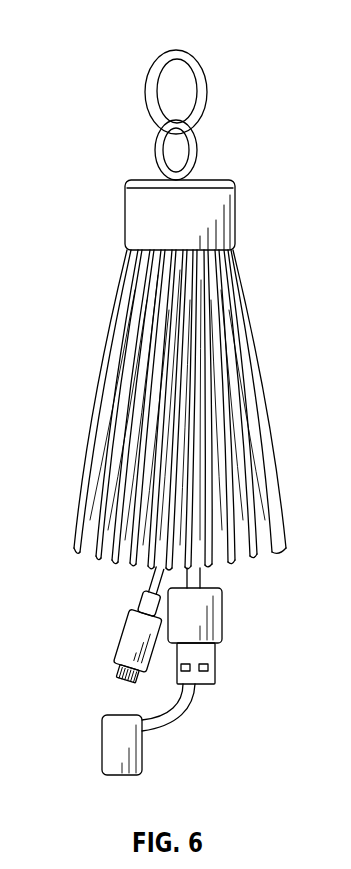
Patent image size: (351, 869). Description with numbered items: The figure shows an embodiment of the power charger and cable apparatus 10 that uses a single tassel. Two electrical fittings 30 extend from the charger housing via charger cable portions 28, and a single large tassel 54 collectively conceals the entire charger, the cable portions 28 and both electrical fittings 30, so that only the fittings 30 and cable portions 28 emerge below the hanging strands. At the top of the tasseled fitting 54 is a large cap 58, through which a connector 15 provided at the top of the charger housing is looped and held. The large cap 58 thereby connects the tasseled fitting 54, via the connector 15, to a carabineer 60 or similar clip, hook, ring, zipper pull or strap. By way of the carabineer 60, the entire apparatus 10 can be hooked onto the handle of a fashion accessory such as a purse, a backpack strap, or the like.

The power charger and cable apparatus 10 is at (100, 78).
The carabineer 60 is at (178, 50).
The connector 15 is at (197, 163).
The large cap 58 is at (236, 222).
The tassel 54 is at (266, 372).
The charger cable portions 28 is at (148, 585).
The electrical fittings 30 is at (100, 665).